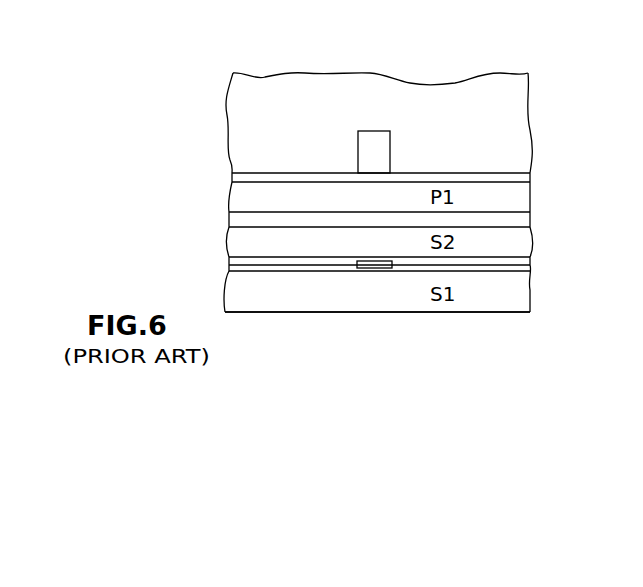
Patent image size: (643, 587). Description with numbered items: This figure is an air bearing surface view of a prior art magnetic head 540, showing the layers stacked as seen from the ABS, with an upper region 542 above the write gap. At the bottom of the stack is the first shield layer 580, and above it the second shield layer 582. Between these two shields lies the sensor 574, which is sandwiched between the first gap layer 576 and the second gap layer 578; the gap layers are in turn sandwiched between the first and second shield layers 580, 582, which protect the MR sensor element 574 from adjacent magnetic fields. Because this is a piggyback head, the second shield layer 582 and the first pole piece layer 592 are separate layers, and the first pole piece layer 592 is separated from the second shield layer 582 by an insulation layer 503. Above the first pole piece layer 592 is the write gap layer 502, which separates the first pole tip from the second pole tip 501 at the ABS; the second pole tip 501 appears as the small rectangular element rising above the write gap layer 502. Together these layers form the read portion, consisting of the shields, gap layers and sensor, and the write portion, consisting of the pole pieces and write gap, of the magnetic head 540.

The prior art magnetic recording medium 540 is at (550, 90).
The upper layer 542 is at (238, 102).
The second pole tip 501 is at (372, 140).
The write gap layer 502 is at (297, 173).
The first pole piece layer 592 is at (237, 193).
The insulation layer 503 is at (522, 222).
The second shield layer 582 is at (230, 243).
The second gap layer 578 is at (492, 260).
The first gap layer 576 is at (285, 272).
The sensor 574 is at (372, 272).
The first shield layer 580 is at (522, 295).